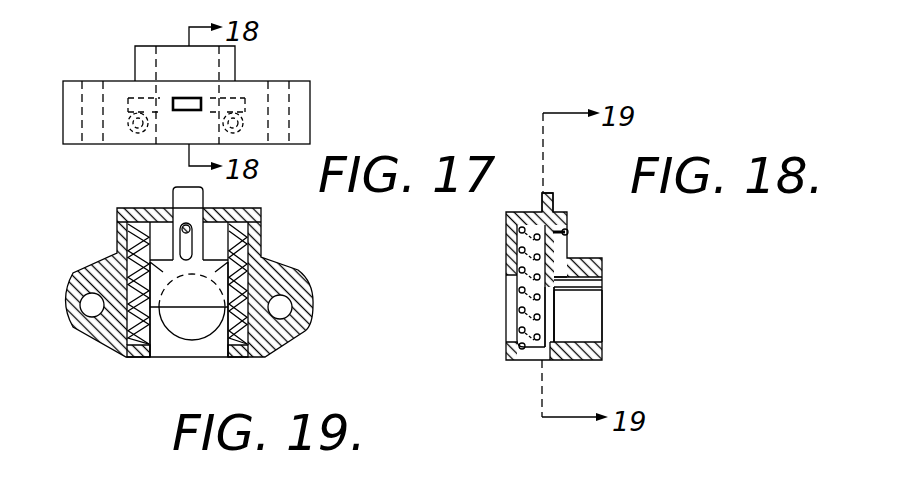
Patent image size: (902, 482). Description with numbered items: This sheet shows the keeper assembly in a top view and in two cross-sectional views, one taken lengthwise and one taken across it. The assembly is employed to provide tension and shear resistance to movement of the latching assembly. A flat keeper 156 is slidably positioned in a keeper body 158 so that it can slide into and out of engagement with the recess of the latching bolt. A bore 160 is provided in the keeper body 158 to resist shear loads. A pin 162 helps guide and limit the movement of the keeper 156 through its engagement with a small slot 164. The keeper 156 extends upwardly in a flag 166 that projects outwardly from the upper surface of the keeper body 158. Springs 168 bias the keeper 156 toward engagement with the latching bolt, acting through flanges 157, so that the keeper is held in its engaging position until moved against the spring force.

In FIG. 18, the keeper 156 is at (590, 287).
In FIG. 19, the keeper 156 is at (193, 297).
In FIG. 19, the flanges 157 is at (138, 352).
In FIG. 17, the keeper body 158 is at (313, 108).
In FIG. 18, the keeper body 158 is at (578, 258).
In FIG. 19, the keeper body 158 is at (302, 333).
In FIG. 18, the bore 160 is at (593, 303).
In FIG. 19, the bore 160 is at (200, 330).
In FIG. 18, the pin 162 is at (563, 230).
In FIG. 19, the pin 162 is at (187, 228).
In FIG. 18, the slot 164 is at (552, 240).
In FIG. 19, the slot 164 is at (193, 240).
In FIG. 17, the flag 166 is at (188, 100).
In FIG. 18, the flag 166 is at (552, 195).
In FIG. 19, the flag 166 is at (183, 190).
In FIG. 18, the springs 168 is at (522, 295).
In FIG. 19, the springs 168 is at (137, 272).